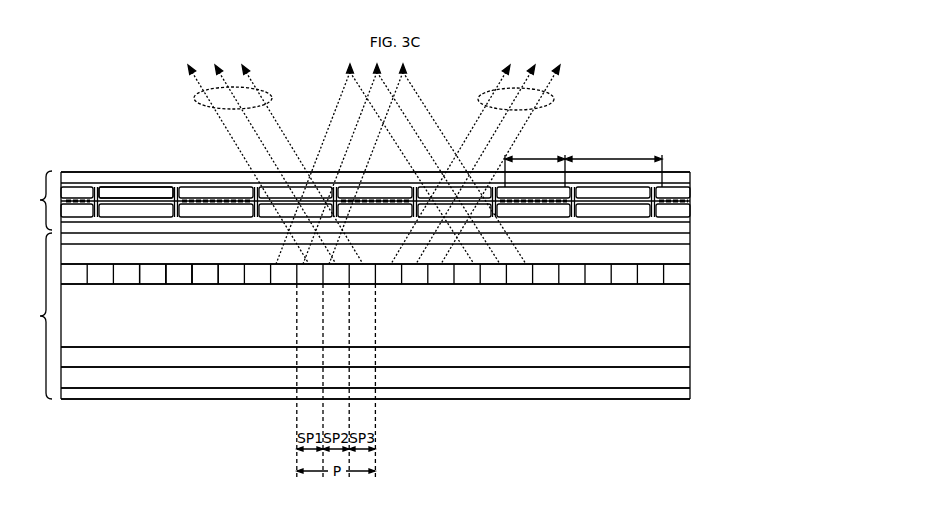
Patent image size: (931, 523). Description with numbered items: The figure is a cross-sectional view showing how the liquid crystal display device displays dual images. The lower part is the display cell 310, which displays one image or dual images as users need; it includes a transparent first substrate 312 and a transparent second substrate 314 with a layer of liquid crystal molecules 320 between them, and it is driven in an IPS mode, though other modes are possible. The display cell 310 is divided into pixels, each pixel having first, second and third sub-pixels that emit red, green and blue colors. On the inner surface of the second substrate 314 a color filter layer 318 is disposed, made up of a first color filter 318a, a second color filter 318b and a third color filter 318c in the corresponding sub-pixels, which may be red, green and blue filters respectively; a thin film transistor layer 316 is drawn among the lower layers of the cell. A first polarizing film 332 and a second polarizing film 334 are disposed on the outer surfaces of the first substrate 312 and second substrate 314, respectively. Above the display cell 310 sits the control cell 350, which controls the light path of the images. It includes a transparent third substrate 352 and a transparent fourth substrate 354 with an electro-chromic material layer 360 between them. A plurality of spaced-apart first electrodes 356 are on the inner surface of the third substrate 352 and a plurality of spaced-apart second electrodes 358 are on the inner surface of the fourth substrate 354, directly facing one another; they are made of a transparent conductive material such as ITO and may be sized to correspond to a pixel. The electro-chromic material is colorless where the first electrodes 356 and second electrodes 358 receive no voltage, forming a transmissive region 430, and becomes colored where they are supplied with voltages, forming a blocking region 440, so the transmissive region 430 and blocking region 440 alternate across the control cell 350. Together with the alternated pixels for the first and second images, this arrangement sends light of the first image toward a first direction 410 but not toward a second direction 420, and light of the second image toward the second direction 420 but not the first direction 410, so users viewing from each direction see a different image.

The display cell 310 is at (348, 285).
The first substrate 312 is at (685, 377).
The second substrate 314 is at (691, 255).
The thin film transistor layer 316 is at (685, 357).
The color filter layer 318 is at (690, 276).
The first color filter 318a is at (148, 284).
The second color filter 318b is at (177, 284).
The third color filter 318c is at (206, 284).
The layer of liquid crystal molecules 320 is at (683, 315).
The first polarizing film 332 is at (660, 395).
The second polarizing film 334 is at (690, 238).
The control cell 350 is at (348, 200).
The third substrate 352 is at (691, 227).
The fourth substrate 354 is at (690, 176).
The first electrodes 356 is at (692, 209).
The second electrodes 358 is at (148, 187).
The electro-chromic material layer 360 is at (655, 186).
The first direction 410 is at (196, 95).
The second direction 420 is at (553, 97).
The transmissive region 430 is at (613, 163).
The blocking region 440 is at (535, 163).